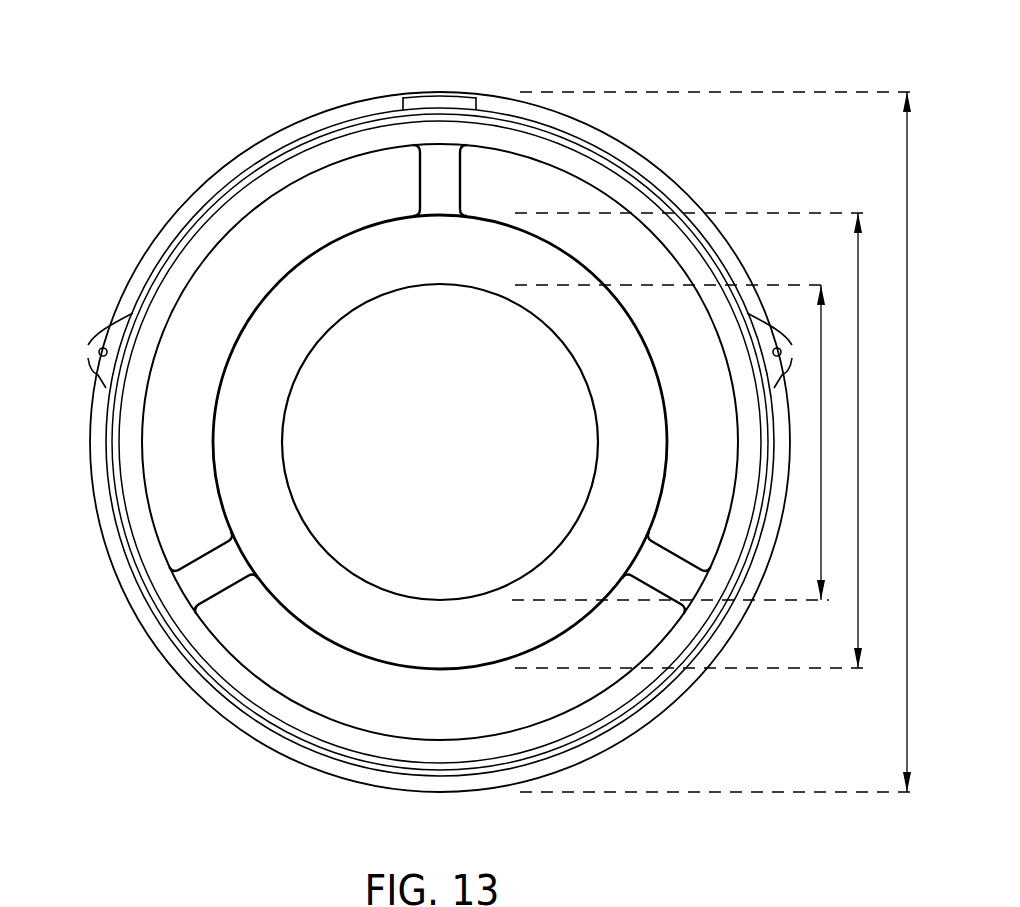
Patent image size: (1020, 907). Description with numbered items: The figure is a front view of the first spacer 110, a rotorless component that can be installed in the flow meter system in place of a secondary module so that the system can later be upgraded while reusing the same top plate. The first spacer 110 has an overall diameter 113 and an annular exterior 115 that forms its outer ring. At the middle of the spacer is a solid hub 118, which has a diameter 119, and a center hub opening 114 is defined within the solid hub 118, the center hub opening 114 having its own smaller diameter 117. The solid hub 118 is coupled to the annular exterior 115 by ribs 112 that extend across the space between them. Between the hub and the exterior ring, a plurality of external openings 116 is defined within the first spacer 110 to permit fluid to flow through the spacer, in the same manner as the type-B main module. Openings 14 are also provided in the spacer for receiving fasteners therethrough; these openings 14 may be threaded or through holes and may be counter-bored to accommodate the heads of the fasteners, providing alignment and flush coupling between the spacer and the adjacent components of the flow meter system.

The first spacer 110 is at (248, 797).
The ribs 112 is at (217, 575).
The diameter 113 is at (907, 440).
The center hub opening 114 is at (350, 388).
The annular exterior 115 is at (267, 148).
The external openings 116 is at (223, 273).
The diameter 117 is at (675, 442).
The solid hub 118 is at (437, 228).
The diameter 119 is at (858, 440).
The openings 14 is at (98, 335).